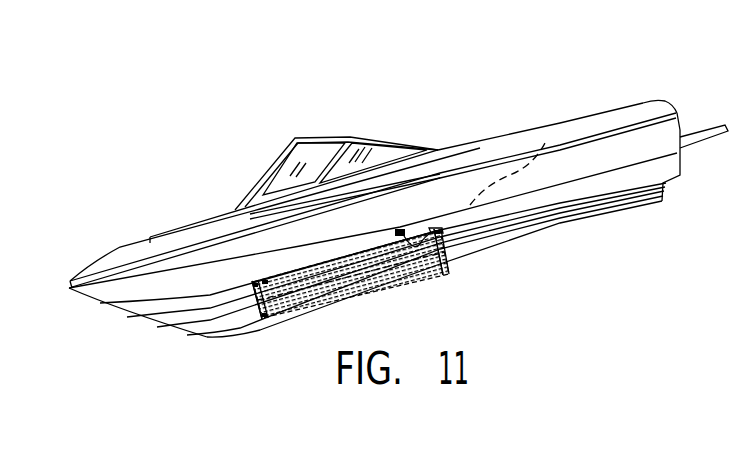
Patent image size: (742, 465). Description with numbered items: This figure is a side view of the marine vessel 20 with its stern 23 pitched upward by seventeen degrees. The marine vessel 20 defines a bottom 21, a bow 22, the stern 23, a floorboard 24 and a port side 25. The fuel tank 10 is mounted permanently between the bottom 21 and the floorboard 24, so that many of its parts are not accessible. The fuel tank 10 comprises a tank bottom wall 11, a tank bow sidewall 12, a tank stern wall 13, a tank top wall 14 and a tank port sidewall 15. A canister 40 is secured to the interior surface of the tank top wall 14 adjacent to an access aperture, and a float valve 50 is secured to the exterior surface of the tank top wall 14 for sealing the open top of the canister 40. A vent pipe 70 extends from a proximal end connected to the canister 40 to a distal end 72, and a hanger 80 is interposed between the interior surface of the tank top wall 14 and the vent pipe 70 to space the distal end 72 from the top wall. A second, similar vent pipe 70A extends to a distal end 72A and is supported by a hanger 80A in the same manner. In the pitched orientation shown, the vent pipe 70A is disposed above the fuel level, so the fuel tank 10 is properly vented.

The fuel tank 10 is at (258, 303).
The tank bottom wall 11 is at (361, 283).
The tank bow sidewall 12 is at (260, 312).
The tank stern wall 13 is at (458, 256).
The tank top wall 14 is at (320, 255).
The tank port sidewall 15 is at (316, 286).
The marine vessel 20 is at (120, 247).
The bottom 21 is at (580, 233).
The bow 22 is at (112, 304).
The stern 23 is at (665, 104).
The floorboard 24 is at (547, 138).
The port side 25 is at (434, 269).
The canister 40 is at (421, 265).
The float valve 50 is at (400, 229).
The vent pipe 70 is at (273, 278).
The vent pipe 70A is at (428, 229).
The distal end 72 is at (264, 279).
The distal end 72A is at (441, 229).
The hanger 80 is at (266, 283).
The hanger 80A is at (445, 276).